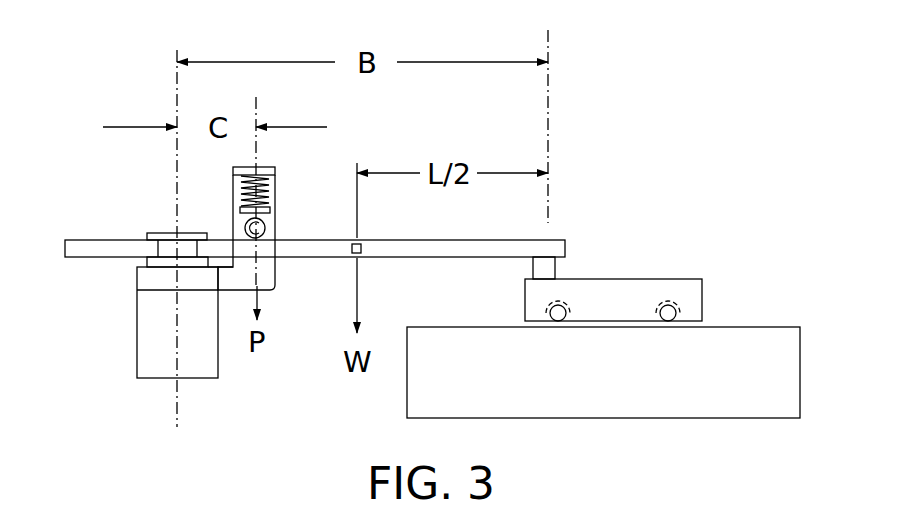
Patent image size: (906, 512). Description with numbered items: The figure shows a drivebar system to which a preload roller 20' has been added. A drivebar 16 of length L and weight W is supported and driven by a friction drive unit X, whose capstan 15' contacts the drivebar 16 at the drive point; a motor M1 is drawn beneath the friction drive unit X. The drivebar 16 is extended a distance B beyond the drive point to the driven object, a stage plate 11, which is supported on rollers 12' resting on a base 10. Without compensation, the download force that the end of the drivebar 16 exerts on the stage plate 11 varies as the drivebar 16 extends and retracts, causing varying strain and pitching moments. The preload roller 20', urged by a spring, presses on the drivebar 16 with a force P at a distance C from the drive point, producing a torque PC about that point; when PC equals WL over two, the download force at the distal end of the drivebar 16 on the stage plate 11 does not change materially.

The base / machine bed 10 is at (790, 352).
The stage plate 11 is at (650, 295).
The rollers 12' is at (612, 350).
The capstan 15' is at (169, 222).
The drivebar 16 is at (557, 246).
The preload roller 20' is at (292, 215).
The motor M1 is at (143, 367).
The friction drive unit X is at (103, 320).